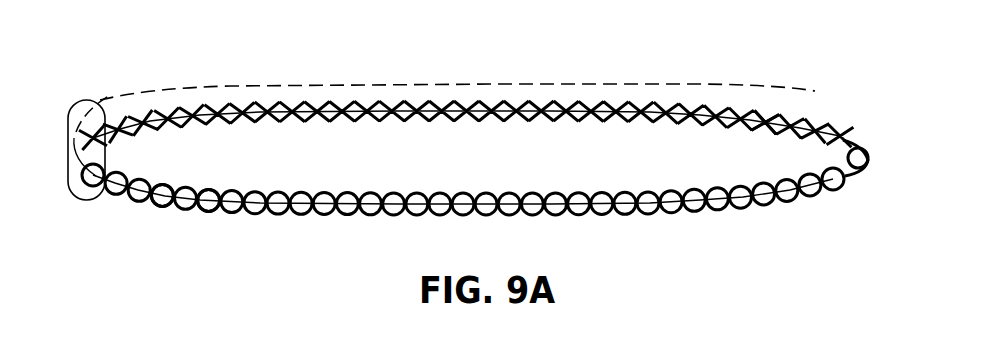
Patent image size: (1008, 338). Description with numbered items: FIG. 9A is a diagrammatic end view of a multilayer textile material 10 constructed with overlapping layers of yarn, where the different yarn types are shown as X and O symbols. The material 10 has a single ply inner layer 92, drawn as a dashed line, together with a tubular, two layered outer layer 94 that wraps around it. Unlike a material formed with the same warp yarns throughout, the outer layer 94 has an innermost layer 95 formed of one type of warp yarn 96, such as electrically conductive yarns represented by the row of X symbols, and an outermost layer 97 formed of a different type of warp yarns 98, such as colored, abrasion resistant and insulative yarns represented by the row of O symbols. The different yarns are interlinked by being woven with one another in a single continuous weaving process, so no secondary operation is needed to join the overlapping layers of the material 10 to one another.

The textile material 10 is at (474, 150).
The single ply inner layer 92 is at (757, 85).
The outer layer 94 is at (765, 206).
The innermost layer 95 is at (777, 117).
The warp yarn 96 is at (715, 107).
The outermost layer 97 is at (164, 207).
The warp yarns 98 is at (210, 213).